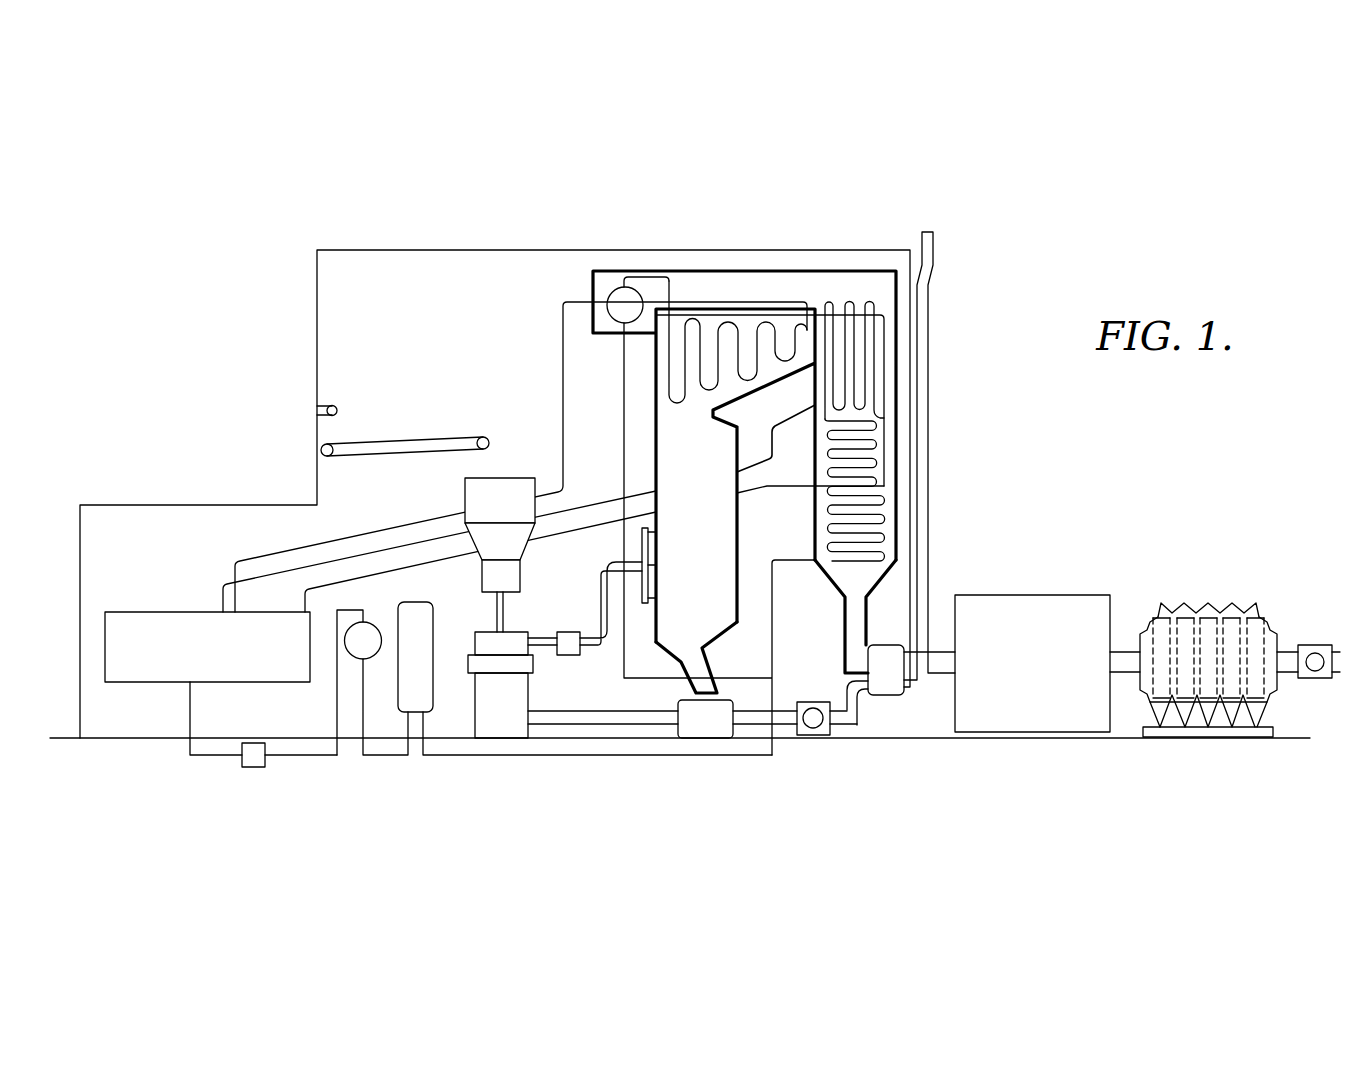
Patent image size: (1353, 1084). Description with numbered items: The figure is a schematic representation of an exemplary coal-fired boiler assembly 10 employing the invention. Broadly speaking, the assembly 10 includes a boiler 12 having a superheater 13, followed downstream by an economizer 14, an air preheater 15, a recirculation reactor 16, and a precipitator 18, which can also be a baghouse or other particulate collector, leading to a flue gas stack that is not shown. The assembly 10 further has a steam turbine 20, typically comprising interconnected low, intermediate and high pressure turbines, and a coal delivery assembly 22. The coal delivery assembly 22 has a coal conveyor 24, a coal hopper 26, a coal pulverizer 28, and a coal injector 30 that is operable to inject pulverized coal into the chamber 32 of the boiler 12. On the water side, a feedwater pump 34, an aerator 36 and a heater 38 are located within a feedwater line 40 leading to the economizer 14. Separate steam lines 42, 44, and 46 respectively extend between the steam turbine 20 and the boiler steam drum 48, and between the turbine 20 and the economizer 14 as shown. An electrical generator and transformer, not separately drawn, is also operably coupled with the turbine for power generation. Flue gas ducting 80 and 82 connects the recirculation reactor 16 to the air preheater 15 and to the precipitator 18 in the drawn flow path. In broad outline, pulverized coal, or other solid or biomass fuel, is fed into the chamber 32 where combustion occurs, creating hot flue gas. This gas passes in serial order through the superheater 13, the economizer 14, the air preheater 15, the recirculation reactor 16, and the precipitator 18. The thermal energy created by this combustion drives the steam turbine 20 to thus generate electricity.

The boiler assembly 10 is at (1004, 259).
The boiler 12 is at (744, 513).
The superheater 13 is at (712, 330).
The economizer 14 is at (882, 438).
The air preheater 15 is at (888, 686).
The recirculation reactor 16 is at (1040, 598).
The precipitator 18 is at (1255, 610).
The steam turbine 20 is at (153, 620).
The coal delivery assembly 22 is at (476, 390).
The coal conveyor 24 is at (388, 441).
The coal hopper 26 is at (512, 487).
The coal pulverizer 28 is at (520, 696).
The coal injector 30 is at (601, 603).
The chamber 32 is at (715, 590).
The feedwater pump 34 is at (250, 767).
The aerator 36 is at (370, 628).
The heater 38 is at (427, 623).
The feedwater line 40 is at (610, 755).
The steam line 42 is at (340, 527).
The steam line 44 is at (396, 540).
The steam line 46 is at (302, 590).
The boiler steam drum 48 is at (613, 300).
The flue gas duct 80 is at (938, 650).
The flue gas duct 82 is at (1122, 655).